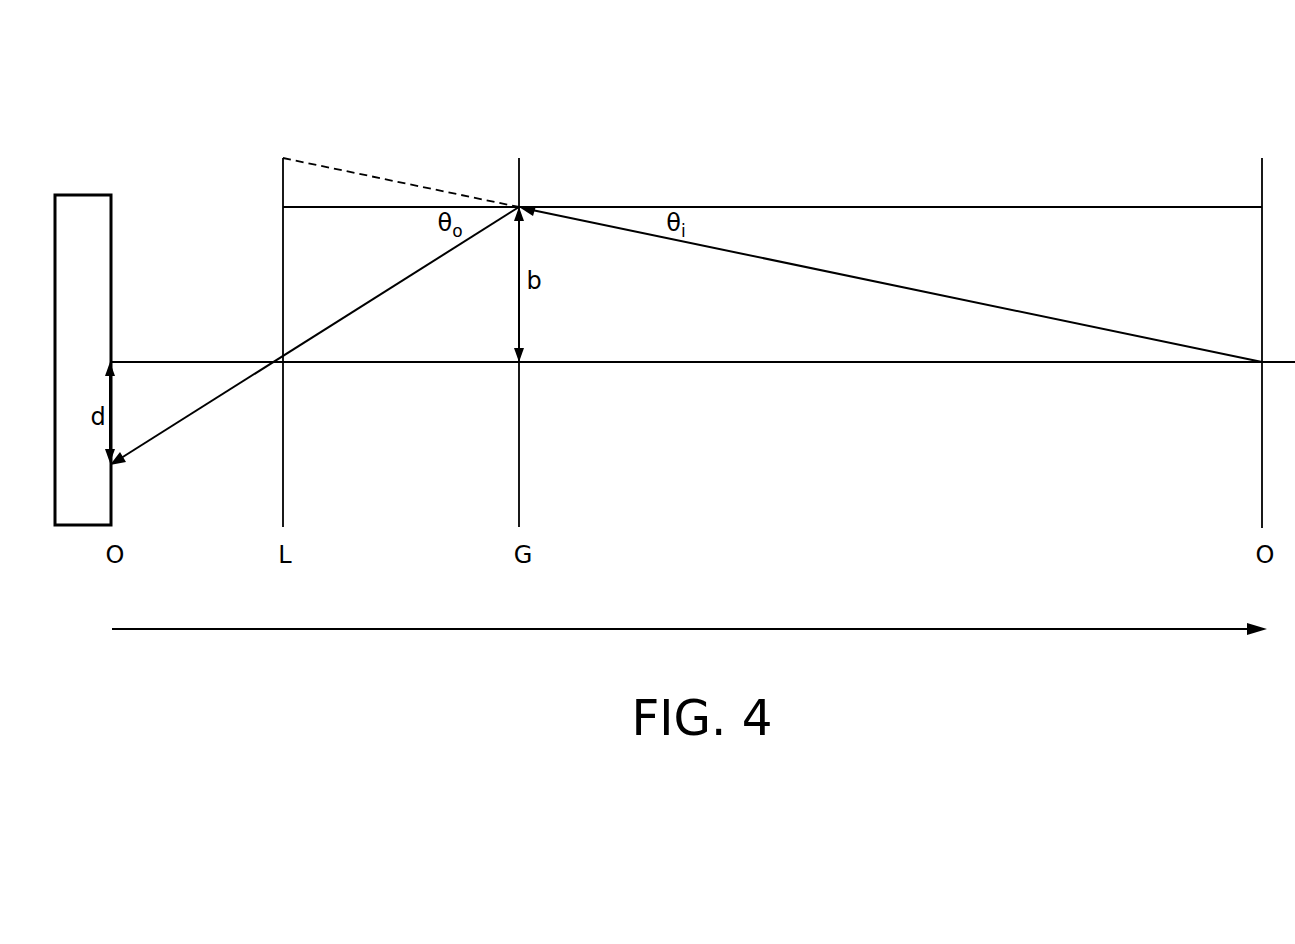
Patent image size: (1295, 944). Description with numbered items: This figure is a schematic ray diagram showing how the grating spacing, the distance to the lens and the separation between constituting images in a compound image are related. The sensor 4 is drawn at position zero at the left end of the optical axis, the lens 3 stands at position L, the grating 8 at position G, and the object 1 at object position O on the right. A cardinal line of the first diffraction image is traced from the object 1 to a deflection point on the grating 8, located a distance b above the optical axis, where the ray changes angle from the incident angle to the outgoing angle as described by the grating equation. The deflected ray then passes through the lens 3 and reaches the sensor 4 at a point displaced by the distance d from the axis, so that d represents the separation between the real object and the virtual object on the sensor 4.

The object 1 is at (1262, 157).
The lens 3 is at (283, 157).
The sensor 4 is at (83, 207).
The grating 8 is at (519, 157).